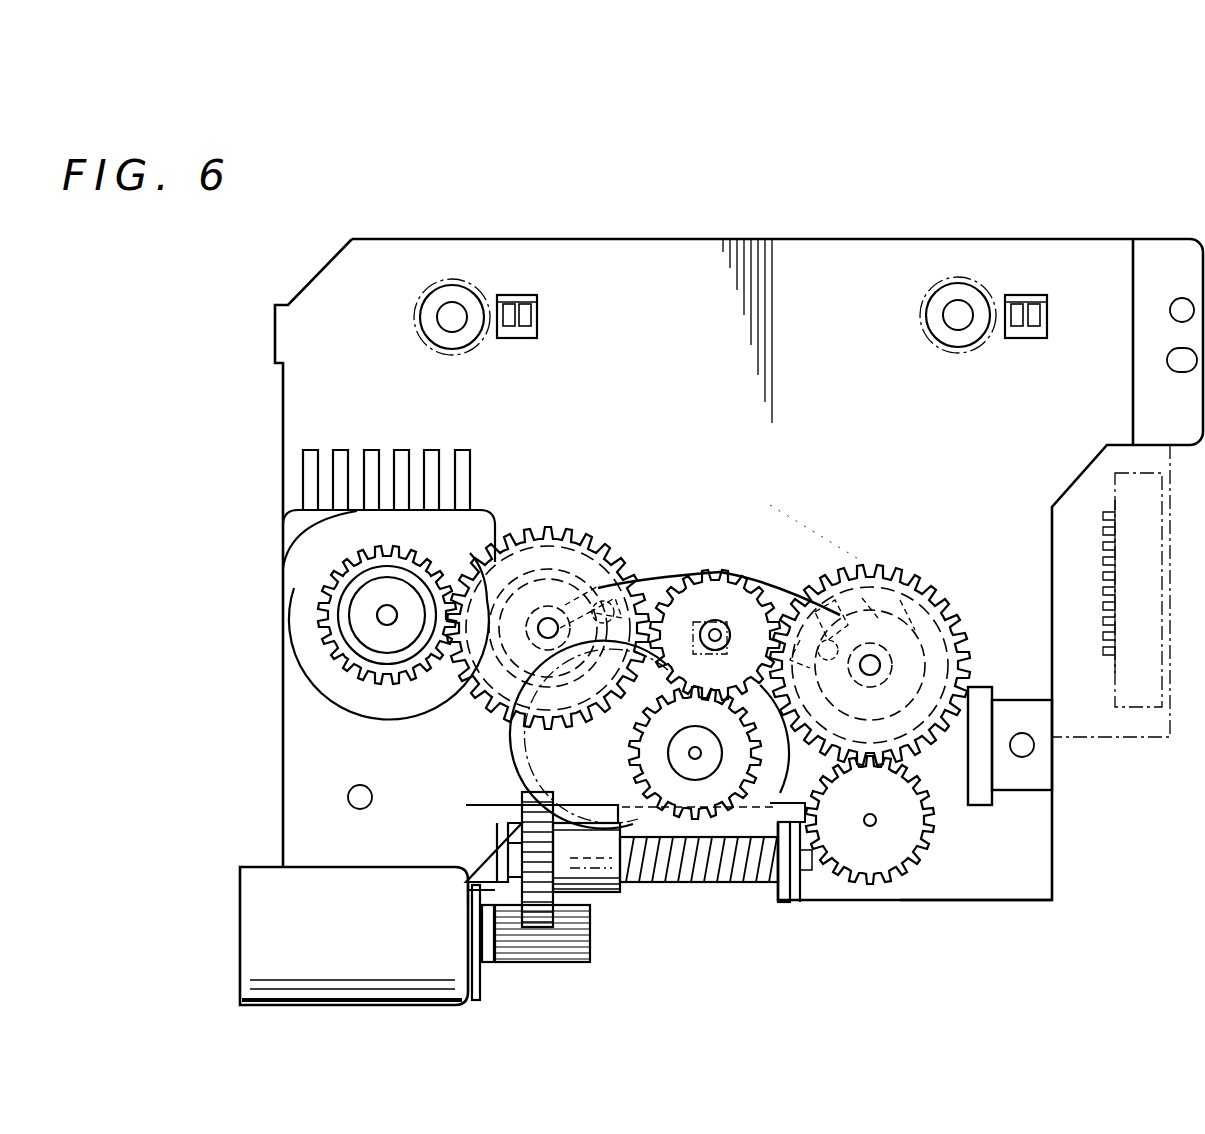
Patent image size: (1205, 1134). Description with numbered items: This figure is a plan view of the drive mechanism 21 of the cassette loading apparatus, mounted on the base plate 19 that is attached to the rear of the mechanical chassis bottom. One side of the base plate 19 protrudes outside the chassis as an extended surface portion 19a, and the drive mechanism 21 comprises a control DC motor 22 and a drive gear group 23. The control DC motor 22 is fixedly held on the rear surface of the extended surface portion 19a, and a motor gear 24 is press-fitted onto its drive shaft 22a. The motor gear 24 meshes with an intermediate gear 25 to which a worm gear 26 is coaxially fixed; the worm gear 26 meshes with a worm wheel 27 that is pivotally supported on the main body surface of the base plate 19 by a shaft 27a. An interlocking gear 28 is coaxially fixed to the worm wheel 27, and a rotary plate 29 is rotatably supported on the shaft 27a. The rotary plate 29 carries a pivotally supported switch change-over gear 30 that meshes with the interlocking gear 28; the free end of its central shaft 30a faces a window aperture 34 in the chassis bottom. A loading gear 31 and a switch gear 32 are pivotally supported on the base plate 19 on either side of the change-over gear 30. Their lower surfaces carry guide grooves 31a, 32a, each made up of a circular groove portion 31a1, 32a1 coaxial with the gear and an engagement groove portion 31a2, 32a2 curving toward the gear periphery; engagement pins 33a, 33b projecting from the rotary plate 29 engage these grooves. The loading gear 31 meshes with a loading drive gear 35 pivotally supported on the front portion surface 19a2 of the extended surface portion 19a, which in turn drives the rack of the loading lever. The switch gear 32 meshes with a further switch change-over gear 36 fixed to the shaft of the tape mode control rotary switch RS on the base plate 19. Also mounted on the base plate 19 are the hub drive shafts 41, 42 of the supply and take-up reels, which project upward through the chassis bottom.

The base plate 19 is at (668, 265).
The extended surface portion 19a is at (1055, 822).
The front portion surface 19a2 is at (940, 882).
The drive mechanism 21 is at (814, 451).
The control DC motor 22 is at (242, 940).
The drive shaft 22a is at (510, 940).
The drive gear group 23 is at (921, 530).
The motor gear 24 is at (590, 935).
The intermediate gear 25 is at (535, 790).
The worm gear 26 is at (725, 885).
The worm wheel 27 is at (690, 878).
The shaft 27a is at (700, 765).
The interlocking gear 28 is at (635, 748).
The rotary plate 29 is at (655, 580).
The switch change-over gear 30 is at (718, 617).
The central shaft 30a is at (745, 640).
The loading gear 31 is at (900, 600).
The guide groove 31a is at (950, 610).
The circular groove portion 31a1 is at (965, 650).
The engagement groove portion 31a2 is at (835, 630).
The switch gear 32 is at (540, 560).
The guide groove 32a is at (512, 535).
The circular groove portion 32a1 is at (565, 545).
The engagement groove portion 32a2 is at (605, 605).
The engagement pin 33a is at (880, 600).
The engagement pin 33b is at (615, 600).
The window aperture 34 is at (712, 625).
The loading drive gear 35 is at (870, 850).
The switch change-over gear 36 is at (360, 665).
The hub drive shaft 41 is at (452, 305).
The hub drive shaft 42 is at (958, 305).
The tape mode control rotary switch RS is at (388, 530).